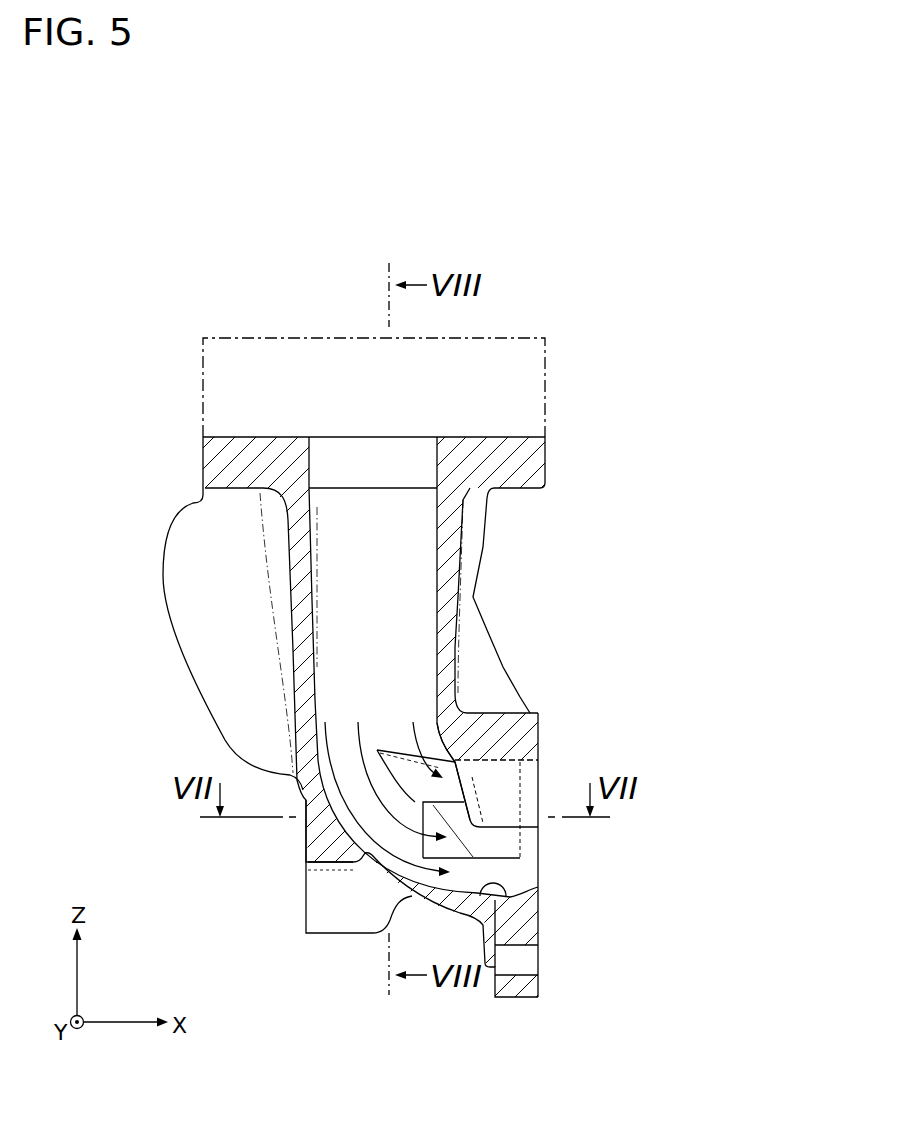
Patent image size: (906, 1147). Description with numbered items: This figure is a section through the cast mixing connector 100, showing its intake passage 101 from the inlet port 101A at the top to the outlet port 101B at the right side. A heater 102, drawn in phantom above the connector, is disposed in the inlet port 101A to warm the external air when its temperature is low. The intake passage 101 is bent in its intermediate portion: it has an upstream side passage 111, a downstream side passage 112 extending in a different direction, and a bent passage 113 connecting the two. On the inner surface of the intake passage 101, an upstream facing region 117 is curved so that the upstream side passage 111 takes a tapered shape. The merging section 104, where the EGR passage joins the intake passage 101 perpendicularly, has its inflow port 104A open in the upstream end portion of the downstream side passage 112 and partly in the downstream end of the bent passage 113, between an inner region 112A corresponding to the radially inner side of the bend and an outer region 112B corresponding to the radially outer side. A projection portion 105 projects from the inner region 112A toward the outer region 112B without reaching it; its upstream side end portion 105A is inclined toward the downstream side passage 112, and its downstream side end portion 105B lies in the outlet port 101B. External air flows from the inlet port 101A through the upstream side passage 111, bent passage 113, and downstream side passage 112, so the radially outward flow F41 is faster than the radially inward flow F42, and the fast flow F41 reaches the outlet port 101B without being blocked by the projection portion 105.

The mixing connector 100 is at (130, 170).
The intake passage 101 is at (300, 626).
The inlet port 101A is at (335, 436).
The outlet port 101B is at (541, 868).
The heater 102 is at (546, 380).
The merging section 104 is at (501, 739).
The inflow port 104A is at (467, 708).
The projection portion 105 is at (500, 813).
The upstream side end portion 105A is at (421, 797).
The downstream side end portion 105B is at (542, 787).
The upstream side passage 111 is at (355, 558).
The downstream side passage 112 is at (539, 858).
The inner region 112A is at (497, 767).
The outer region 112B is at (500, 897).
The bent passage 113 is at (360, 800).
The upstream facing region 117 is at (405, 572).
The flow of external air flowing outward in the radial direction F41 is at (360, 826).
The flow of external air flowing inward in the radial direction F42 is at (428, 737).